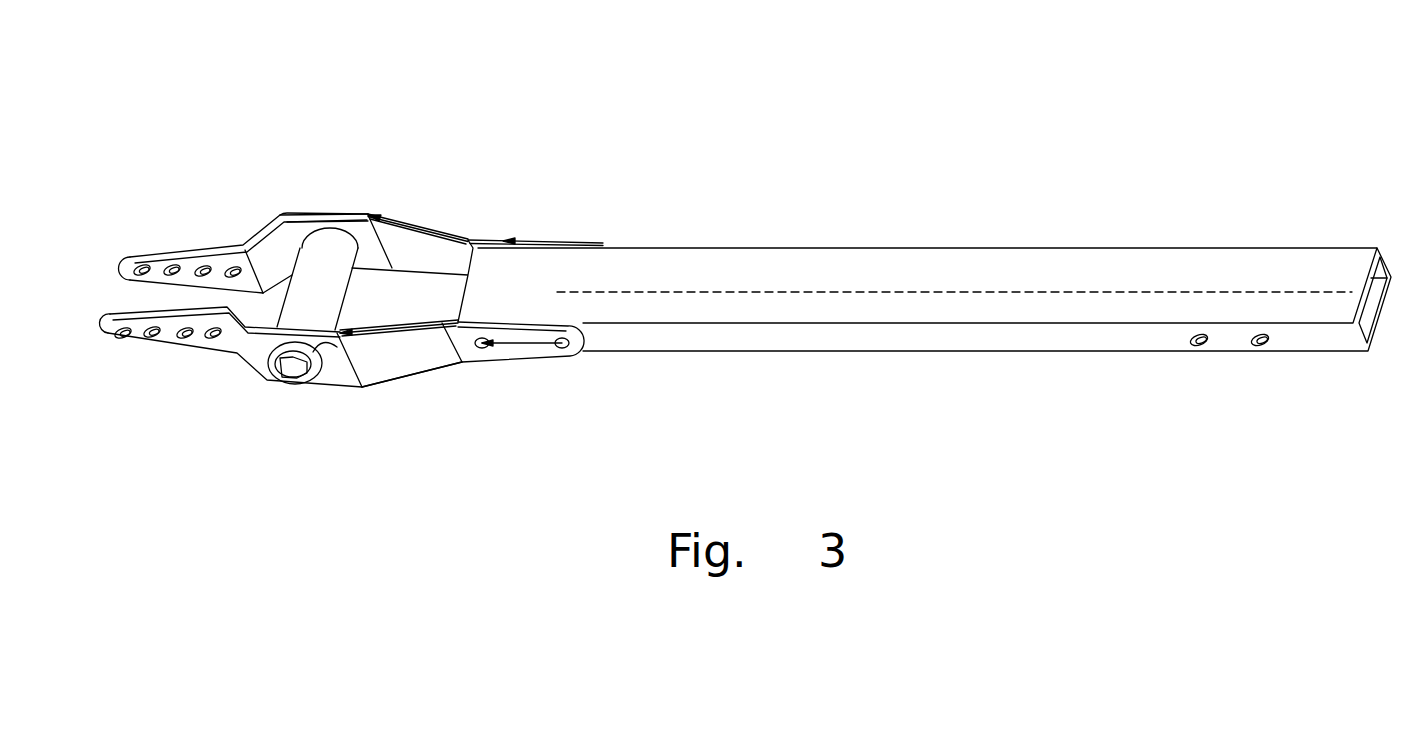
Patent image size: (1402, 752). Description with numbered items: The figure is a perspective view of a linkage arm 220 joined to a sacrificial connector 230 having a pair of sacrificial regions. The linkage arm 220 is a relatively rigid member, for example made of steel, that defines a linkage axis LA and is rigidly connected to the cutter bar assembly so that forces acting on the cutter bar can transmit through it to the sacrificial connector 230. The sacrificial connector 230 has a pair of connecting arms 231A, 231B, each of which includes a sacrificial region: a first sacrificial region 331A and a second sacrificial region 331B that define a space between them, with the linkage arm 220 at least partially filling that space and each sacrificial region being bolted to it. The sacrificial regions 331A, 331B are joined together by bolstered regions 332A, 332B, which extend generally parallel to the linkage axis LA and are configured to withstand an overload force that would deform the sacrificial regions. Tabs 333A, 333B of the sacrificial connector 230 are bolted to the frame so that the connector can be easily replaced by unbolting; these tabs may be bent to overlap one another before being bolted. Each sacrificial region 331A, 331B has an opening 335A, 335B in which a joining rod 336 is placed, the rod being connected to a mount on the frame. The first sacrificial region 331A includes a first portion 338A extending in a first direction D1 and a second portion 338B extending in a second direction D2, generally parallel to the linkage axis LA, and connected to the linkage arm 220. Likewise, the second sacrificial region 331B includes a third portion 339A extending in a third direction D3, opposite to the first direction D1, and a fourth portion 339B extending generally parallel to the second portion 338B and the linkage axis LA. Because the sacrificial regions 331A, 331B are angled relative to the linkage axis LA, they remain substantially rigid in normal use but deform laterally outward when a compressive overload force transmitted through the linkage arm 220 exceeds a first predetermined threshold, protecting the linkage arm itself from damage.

The linkage arm 220 is at (762, 248).
The linkage axis LA is at (1242, 292).
The sacrificial connector 230 is at (247, 218).
The connecting arm 231A is at (375, 392).
The connecting arm 231B is at (360, 203).
The first sacrificial region 331A is at (403, 362).
The second sacrificial region 331B is at (395, 233).
The bolstered region 332A is at (277, 385).
The bolstered region 332B is at (322, 222).
The tab 333A is at (163, 341).
The tab 333B is at (168, 254).
The opening 335A is at (325, 343).
The opening 335B is at (340, 226).
The joining rod 336 is at (312, 275).
The first portion 338A is at (388, 378).
The second portion 338B is at (504, 362).
The third portion 339A is at (445, 229).
The fourth portion 339B is at (523, 241).
The first direction D1 is at (383, 330).
The second direction D2 is at (525, 346).
The third direction D3 is at (427, 228).